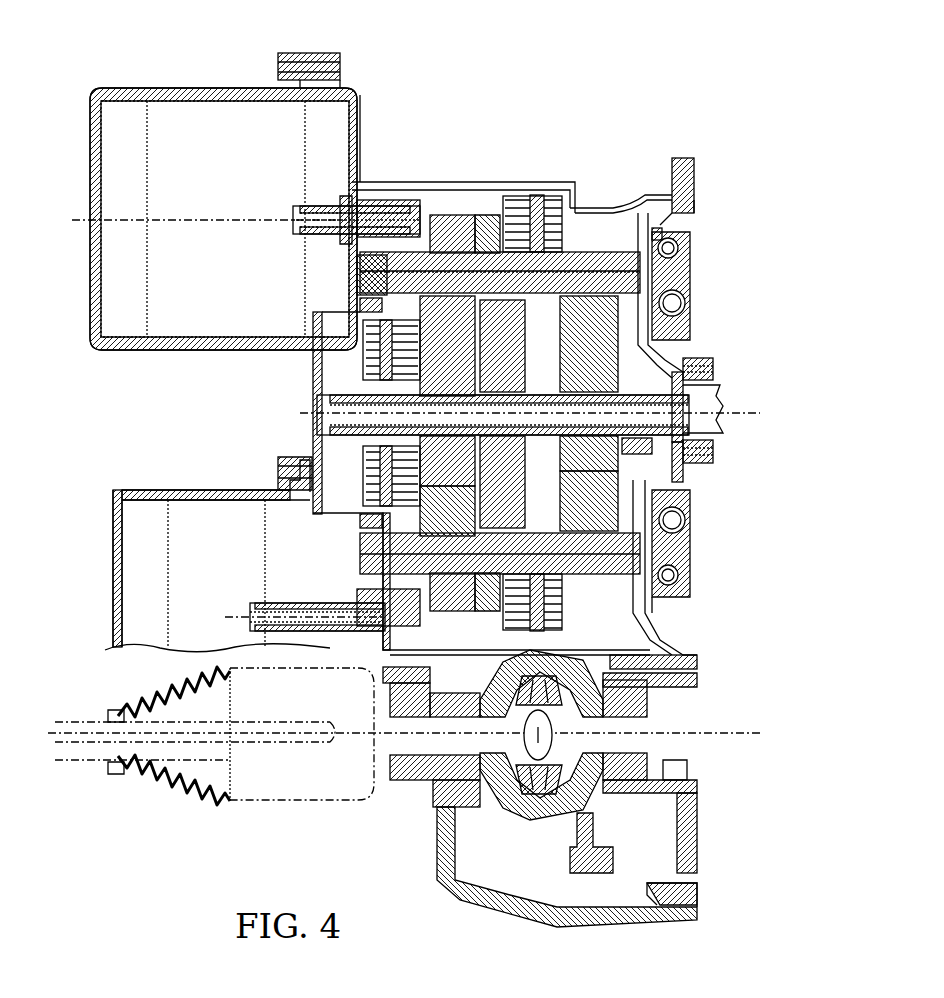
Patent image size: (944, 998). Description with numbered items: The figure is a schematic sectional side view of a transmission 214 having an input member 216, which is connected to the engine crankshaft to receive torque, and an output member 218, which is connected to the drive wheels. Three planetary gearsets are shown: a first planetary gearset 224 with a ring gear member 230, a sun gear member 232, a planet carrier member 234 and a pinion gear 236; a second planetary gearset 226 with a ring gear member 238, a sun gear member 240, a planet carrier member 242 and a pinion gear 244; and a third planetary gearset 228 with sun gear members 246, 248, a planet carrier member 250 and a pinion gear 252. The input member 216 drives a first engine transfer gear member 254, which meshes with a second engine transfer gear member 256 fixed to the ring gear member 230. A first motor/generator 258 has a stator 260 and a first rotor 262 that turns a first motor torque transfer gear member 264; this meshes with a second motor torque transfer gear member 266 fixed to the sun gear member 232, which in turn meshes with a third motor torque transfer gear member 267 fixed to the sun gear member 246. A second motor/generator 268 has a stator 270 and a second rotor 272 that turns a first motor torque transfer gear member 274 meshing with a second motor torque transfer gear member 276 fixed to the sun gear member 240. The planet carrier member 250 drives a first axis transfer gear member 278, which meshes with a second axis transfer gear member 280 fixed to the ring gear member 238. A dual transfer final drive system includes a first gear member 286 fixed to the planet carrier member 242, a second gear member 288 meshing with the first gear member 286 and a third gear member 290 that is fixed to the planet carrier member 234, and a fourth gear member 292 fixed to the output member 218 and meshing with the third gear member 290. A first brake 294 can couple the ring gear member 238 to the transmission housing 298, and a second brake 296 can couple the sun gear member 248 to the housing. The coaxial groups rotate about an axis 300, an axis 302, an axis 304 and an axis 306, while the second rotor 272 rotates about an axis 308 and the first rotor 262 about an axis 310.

The transmission 214 is at (531, 74).
The input member 216 is at (712, 385).
The output member 218 is at (318, 800).
The first planetary gearset 224 is at (508, 640).
The second planetary gearset 226 is at (497, 228).
The third planetary gearset 228 is at (333, 349).
The ring gear member 230 is at (645, 448).
The sun gear member 232 is at (602, 498).
The planet carrier member 234 is at (602, 484).
The pinion gear 236 is at (580, 620).
The ring gear member 238 is at (540, 205).
The sun gear member 240 is at (638, 230).
The planet carrier member 242 is at (580, 195).
The pinion gear 244 is at (584, 208).
The sun gear member 246 is at (405, 443).
The sun gear member 248 is at (420, 462).
The planet carrier member 250 is at (364, 304).
The pinion gear 252 is at (372, 336).
The first engine transfer gear member 254 is at (688, 282).
The second engine transfer gear member 256 is at (492, 496).
The first motor/generator 258 is at (130, 490).
The stator 260 is at (112, 585).
The first rotor 262 is at (300, 604).
The first motor torque transfer gear member 264 is at (418, 632).
The second motor torque transfer gear member 266 is at (405, 590).
The third motor torque transfer gear member 267 is at (418, 482).
The second motor/generator 268 is at (130, 88).
The stator 270 is at (92, 166).
The second rotor 272 is at (332, 208).
The first motor torque transfer gear member 274 is at (412, 202).
The second motor torque transfer gear member 276 is at (372, 270).
The first axis transfer gear member 278 is at (473, 323).
The second axis transfer gear member 280 is at (470, 232).
The first gear member 286 is at (612, 312).
The second gear member 288 is at (618, 355).
The third gear member 290 is at (618, 520).
The fourth gear member 292 is at (600, 605).
The first brake 294 is at (528, 212).
The second brake 296 is at (366, 525).
The transmission housing 298 is at (432, 182).
The axis 300 is at (724, 394).
The axis 302 is at (640, 600).
The axis 304 is at (676, 238).
The axis 306 is at (700, 748).
The axis 308 is at (222, 212).
The axis 310 is at (238, 616).